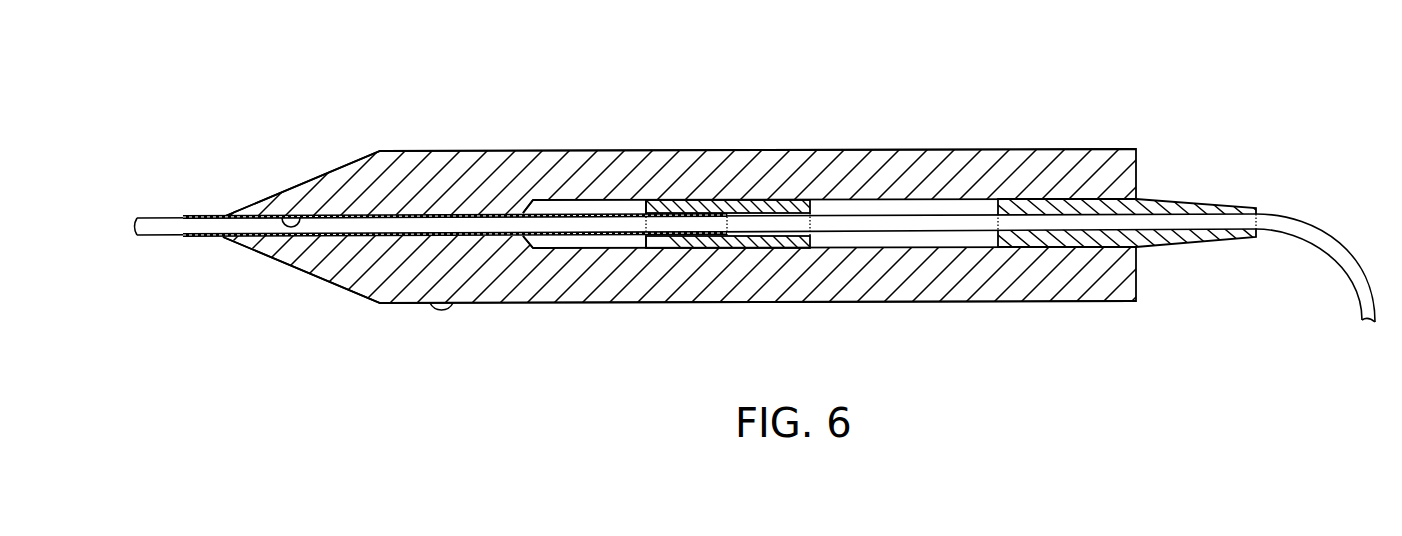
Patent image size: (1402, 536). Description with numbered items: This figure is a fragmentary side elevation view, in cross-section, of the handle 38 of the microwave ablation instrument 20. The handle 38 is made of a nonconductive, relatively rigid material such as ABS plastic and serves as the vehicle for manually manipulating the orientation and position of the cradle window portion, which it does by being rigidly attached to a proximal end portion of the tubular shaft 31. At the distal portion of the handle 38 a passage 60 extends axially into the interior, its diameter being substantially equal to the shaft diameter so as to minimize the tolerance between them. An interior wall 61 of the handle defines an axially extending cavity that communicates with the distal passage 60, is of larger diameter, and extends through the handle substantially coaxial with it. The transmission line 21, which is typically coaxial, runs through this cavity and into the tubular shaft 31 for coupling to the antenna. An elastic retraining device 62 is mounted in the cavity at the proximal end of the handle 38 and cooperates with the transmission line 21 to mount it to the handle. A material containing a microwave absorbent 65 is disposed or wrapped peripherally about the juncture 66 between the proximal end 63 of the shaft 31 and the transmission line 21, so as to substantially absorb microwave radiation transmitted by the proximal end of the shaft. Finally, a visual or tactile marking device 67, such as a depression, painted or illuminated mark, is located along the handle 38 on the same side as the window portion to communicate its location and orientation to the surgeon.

The microwave ablation instrument 20 is at (1042, 102).
The transmission line 21 is at (157, 216).
The tubular shaft 31 is at (206, 205).
The handle 38 is at (512, 142).
The passage 60 is at (290, 216).
The interior wall 61 is at (938, 247).
The elastic retraining device 62 is at (1162, 200).
The proximal end of the shaft 63 is at (700, 212).
The microwave absorbent 65 is at (699, 252).
The juncture 66 is at (732, 212).
The marking device 67 is at (442, 306).